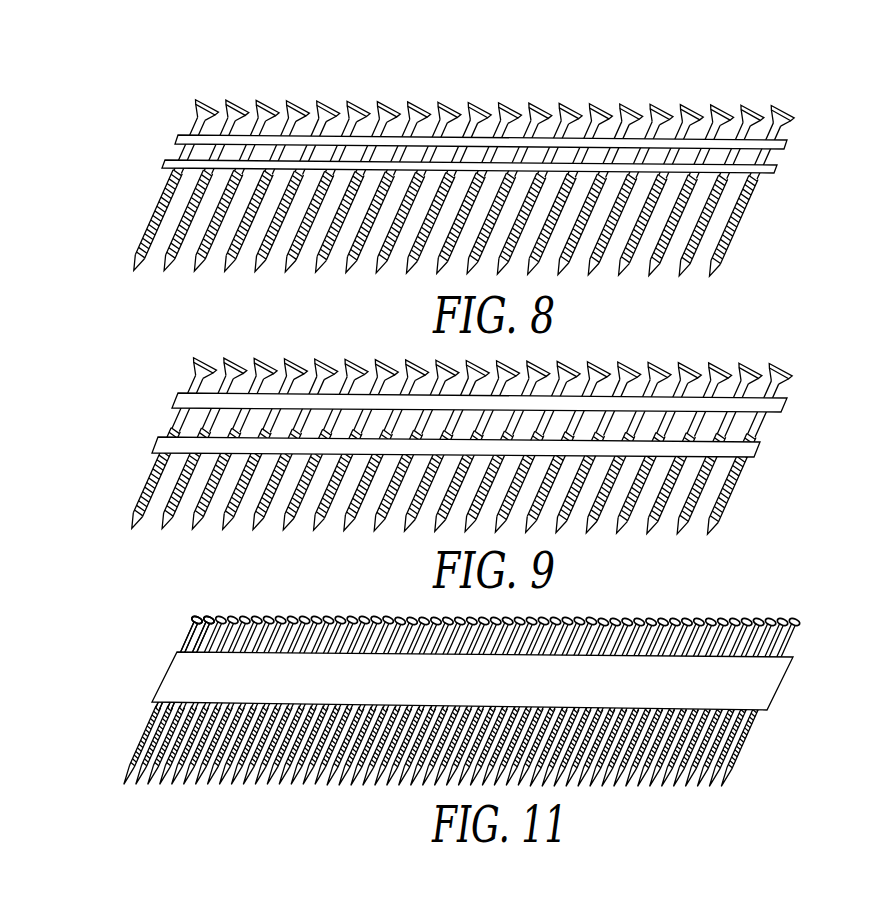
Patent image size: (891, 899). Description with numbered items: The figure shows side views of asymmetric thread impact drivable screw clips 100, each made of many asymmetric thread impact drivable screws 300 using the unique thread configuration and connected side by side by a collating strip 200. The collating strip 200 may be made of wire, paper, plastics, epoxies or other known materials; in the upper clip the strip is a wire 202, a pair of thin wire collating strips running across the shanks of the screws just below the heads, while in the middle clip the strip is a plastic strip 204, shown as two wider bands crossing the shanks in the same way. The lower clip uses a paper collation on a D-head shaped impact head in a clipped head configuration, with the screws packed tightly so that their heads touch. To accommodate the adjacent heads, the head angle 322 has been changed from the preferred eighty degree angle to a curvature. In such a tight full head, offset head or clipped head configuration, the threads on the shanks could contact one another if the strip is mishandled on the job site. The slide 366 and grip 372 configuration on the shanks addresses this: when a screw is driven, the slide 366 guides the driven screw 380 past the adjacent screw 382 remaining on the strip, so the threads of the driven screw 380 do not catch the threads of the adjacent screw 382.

In FIG. 8, the asymmetric thread impact drivable screw clip 100 is at (489, 153).
In FIG. 9, the asymmetric thread impact drivable screw clip 100 is at (488, 426).
In FIG. 8, the asymmetric thread impact drivable screw 300 is at (748, 112).
In FIG. 9, the asymmetric thread impact drivable screw 300 is at (773, 370).
In FIG. 8, the collating strip 200 is at (787, 145).
In FIG. 9, the collating strip 200 is at (784, 406).
In FIG. 8, the wire 202 is at (777, 169).
In FIG. 9, the plastic strip 204 is at (758, 452).
In FIG. 11, the head angle 322 is at (193, 620).
In FIG. 11, the driven screw 380 is at (197, 614).
In FIG. 11, the adjacent screw 382 is at (207, 617).
In FIG. 11, the grip 372 is at (152, 705).
In FIG. 11, the slide 366 is at (150, 722).